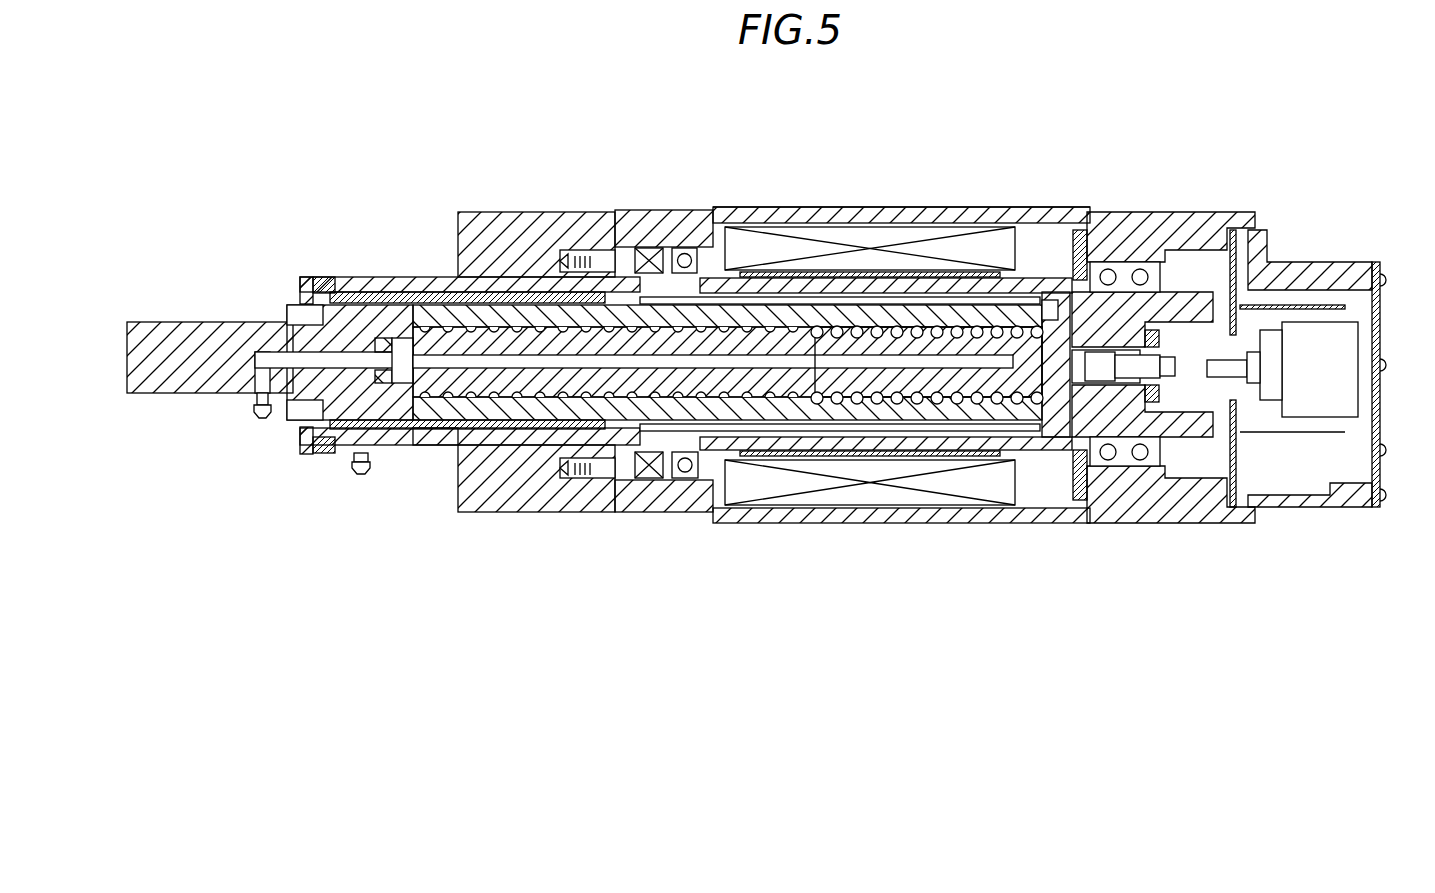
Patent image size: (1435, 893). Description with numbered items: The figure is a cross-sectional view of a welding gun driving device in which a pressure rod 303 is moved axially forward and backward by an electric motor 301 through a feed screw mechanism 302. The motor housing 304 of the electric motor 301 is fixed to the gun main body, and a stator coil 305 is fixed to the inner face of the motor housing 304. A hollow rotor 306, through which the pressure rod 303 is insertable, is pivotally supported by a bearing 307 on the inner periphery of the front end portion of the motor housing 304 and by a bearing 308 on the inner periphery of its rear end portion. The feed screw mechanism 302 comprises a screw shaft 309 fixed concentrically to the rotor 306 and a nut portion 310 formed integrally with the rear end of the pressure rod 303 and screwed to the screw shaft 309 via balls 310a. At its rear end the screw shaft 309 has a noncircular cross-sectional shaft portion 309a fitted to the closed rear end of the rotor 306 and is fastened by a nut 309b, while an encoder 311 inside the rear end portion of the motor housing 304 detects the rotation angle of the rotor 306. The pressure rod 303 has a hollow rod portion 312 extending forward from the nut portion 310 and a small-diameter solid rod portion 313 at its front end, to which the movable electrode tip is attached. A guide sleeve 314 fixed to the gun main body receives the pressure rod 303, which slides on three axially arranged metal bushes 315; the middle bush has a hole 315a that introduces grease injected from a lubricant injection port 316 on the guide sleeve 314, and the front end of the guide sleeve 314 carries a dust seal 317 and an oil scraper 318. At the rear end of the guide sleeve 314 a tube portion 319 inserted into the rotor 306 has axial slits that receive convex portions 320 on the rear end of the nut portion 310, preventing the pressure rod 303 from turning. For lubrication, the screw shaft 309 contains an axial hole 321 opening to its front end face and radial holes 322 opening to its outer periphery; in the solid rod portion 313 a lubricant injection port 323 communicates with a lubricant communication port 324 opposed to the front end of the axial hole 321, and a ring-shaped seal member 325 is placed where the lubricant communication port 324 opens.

The electric motor 301 is at (1012, 200).
The feed screw mechanism 302 is at (1060, 306).
The pressure rod 303 is at (625, 298).
The motor housing 304 is at (1074, 211).
The stator coil 305 is at (972, 222).
The rotor 306 is at (1062, 450).
The bearing 307 is at (678, 480).
The bearing 308 is at (1122, 466).
The screw shaft 309 is at (975, 400).
The noncircular cross-sectional shaft portion 309a is at (1160, 358).
The nut 309b is at (1160, 388).
The nut portion 310 is at (915, 397).
The balls 310a is at (828, 404).
The encoder 311 is at (1353, 328).
The hollow rod portion 312 is at (703, 412).
The solid rod portion 313 is at (205, 321).
The guide sleeve 314 is at (347, 277).
The metal bushes 315 is at (512, 278).
The hole 315a is at (442, 445).
The lubricant injection port 316 is at (362, 474).
The dust seal 317 is at (305, 432).
The oil scraper 318 is at (338, 440).
The tube portion 319 is at (792, 276).
The convex portions 320 is at (1026, 300).
The axial hole 321 is at (545, 352).
The radial holes 322 is at (975, 237).
The lubricant injection port 323 is at (260, 388).
The lubricant communication port 324 is at (390, 425).
The ring-shaped seal member 325 is at (396, 294).